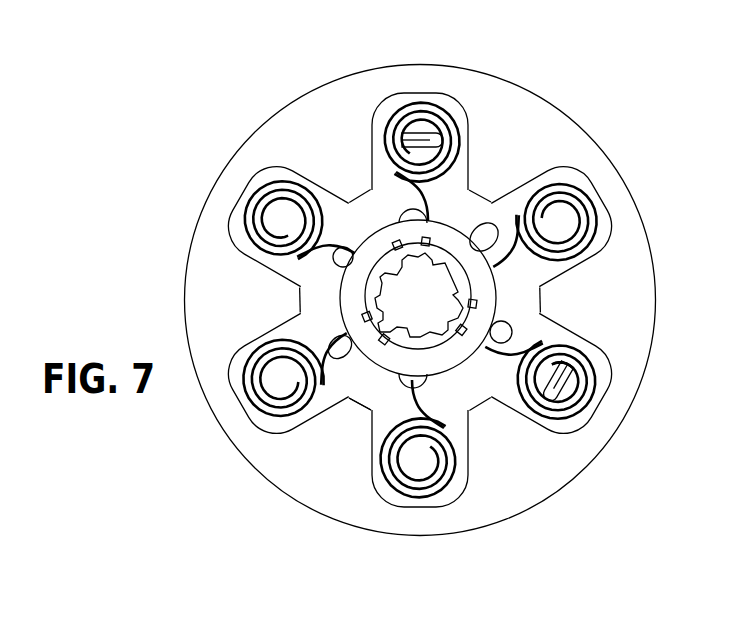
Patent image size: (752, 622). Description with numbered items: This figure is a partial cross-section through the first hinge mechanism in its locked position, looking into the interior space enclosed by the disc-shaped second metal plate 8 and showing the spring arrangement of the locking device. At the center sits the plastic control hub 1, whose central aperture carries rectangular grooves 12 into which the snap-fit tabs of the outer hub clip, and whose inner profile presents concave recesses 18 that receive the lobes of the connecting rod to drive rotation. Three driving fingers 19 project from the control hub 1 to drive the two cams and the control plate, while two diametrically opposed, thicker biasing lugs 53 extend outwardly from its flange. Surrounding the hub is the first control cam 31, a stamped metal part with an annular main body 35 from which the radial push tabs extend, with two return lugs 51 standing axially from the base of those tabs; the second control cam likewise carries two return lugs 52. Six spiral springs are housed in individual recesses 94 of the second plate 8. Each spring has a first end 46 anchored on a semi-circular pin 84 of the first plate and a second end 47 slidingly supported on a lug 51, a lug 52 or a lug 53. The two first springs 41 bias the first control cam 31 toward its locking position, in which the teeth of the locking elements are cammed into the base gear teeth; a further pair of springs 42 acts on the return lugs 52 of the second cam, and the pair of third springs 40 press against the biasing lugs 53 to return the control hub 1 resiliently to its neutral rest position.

The control hub 1 is at (391, 282).
The second metal plate 8 is at (509, 70).
The rectangular grooves 12 is at (420, 318).
The concave recess 18 is at (350, 395).
The driving fingers 19 is at (398, 232).
The first control cam 31 is at (497, 297).
The annular main body 35 is at (355, 298).
The third springs 40 is at (590, 187).
The first springs 41 is at (415, 99).
The spiral spring 42 is at (243, 197).
The first end 46 is at (590, 410).
The second end 47 is at (503, 357).
The return lugs 51 is at (413, 183).
The return lugs 52 is at (313, 187).
The biasing lugs 53 is at (487, 234).
The semi-circular pin 84 is at (573, 383).
The recess 94 is at (383, 107).